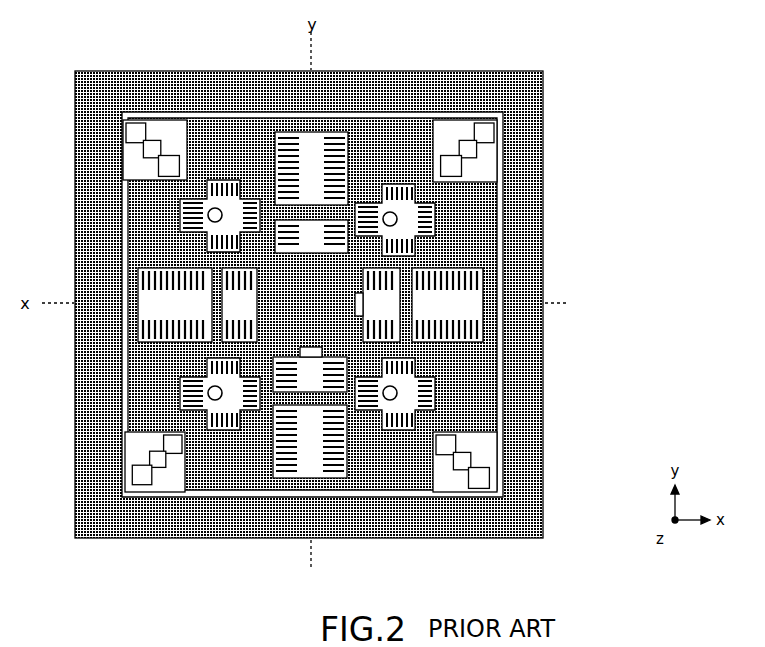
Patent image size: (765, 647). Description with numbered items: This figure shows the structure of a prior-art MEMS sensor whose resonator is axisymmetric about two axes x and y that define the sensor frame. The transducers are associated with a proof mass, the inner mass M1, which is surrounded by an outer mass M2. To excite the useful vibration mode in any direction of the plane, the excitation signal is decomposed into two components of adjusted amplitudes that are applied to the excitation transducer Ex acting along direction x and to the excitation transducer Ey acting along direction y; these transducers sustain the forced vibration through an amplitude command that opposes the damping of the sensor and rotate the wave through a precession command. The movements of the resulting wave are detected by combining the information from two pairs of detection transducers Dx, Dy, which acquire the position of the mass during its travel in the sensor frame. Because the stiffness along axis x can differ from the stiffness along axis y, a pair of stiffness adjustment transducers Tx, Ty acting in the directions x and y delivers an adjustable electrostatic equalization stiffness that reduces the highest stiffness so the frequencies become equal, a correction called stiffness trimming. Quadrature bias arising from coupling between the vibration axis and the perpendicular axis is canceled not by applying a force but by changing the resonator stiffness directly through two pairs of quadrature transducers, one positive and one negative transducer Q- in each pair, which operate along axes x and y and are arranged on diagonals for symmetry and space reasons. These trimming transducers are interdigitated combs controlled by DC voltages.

The inner mass M1 is at (393, 126).
The outer mass / substrate M2 is at (528, 93).
The detection transducer Dx is at (310, 305).
The detection transducer Dy is at (310, 305).
The excitation transducer Ex is at (239, 305).
The excitation transducer Ey is at (311, 236).
The stiffness adjustment transducer Tx is at (377, 305).
The stiffness adjustment transducer Ty is at (310, 369).
The quadrature transducer Q- is at (307, 307).